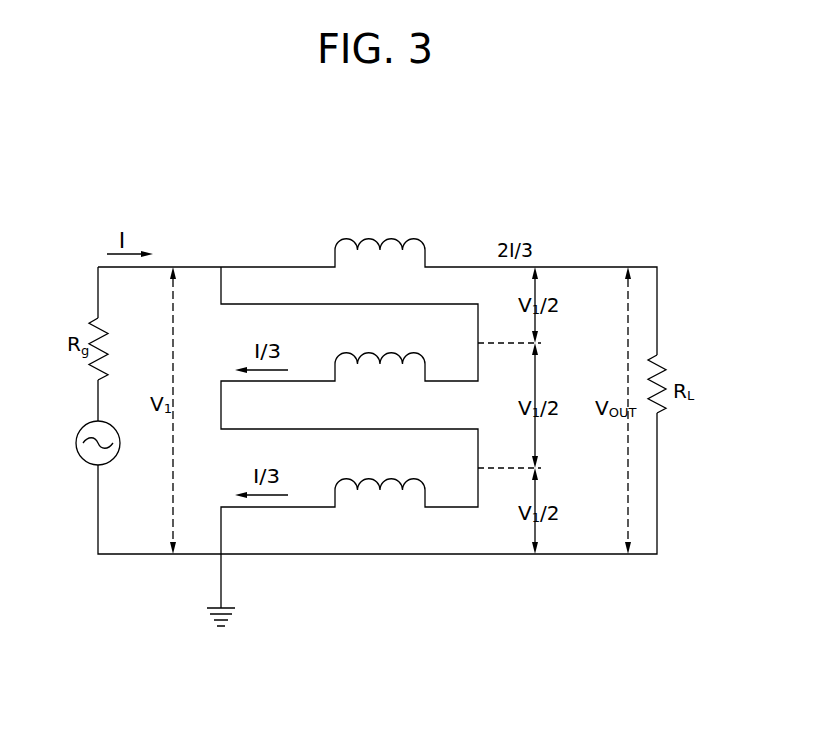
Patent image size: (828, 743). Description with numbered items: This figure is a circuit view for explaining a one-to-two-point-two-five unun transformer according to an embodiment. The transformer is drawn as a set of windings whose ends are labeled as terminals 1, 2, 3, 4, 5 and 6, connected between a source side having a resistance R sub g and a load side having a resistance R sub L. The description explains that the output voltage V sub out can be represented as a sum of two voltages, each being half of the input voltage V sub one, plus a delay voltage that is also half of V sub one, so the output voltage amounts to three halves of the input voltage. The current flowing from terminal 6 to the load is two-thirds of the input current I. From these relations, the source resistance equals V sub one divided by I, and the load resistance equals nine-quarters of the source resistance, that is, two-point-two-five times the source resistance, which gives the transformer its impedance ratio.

The first terminal of first coil 1 is at (317, 496).
The second terminal of first coil 2 is at (442, 496).
The first terminal of second coil 3 is at (317, 370).
The second terminal of second coil 4 is at (442, 370).
The first terminal of third coil 5 is at (317, 256).
The terminal 6 is at (442, 256).